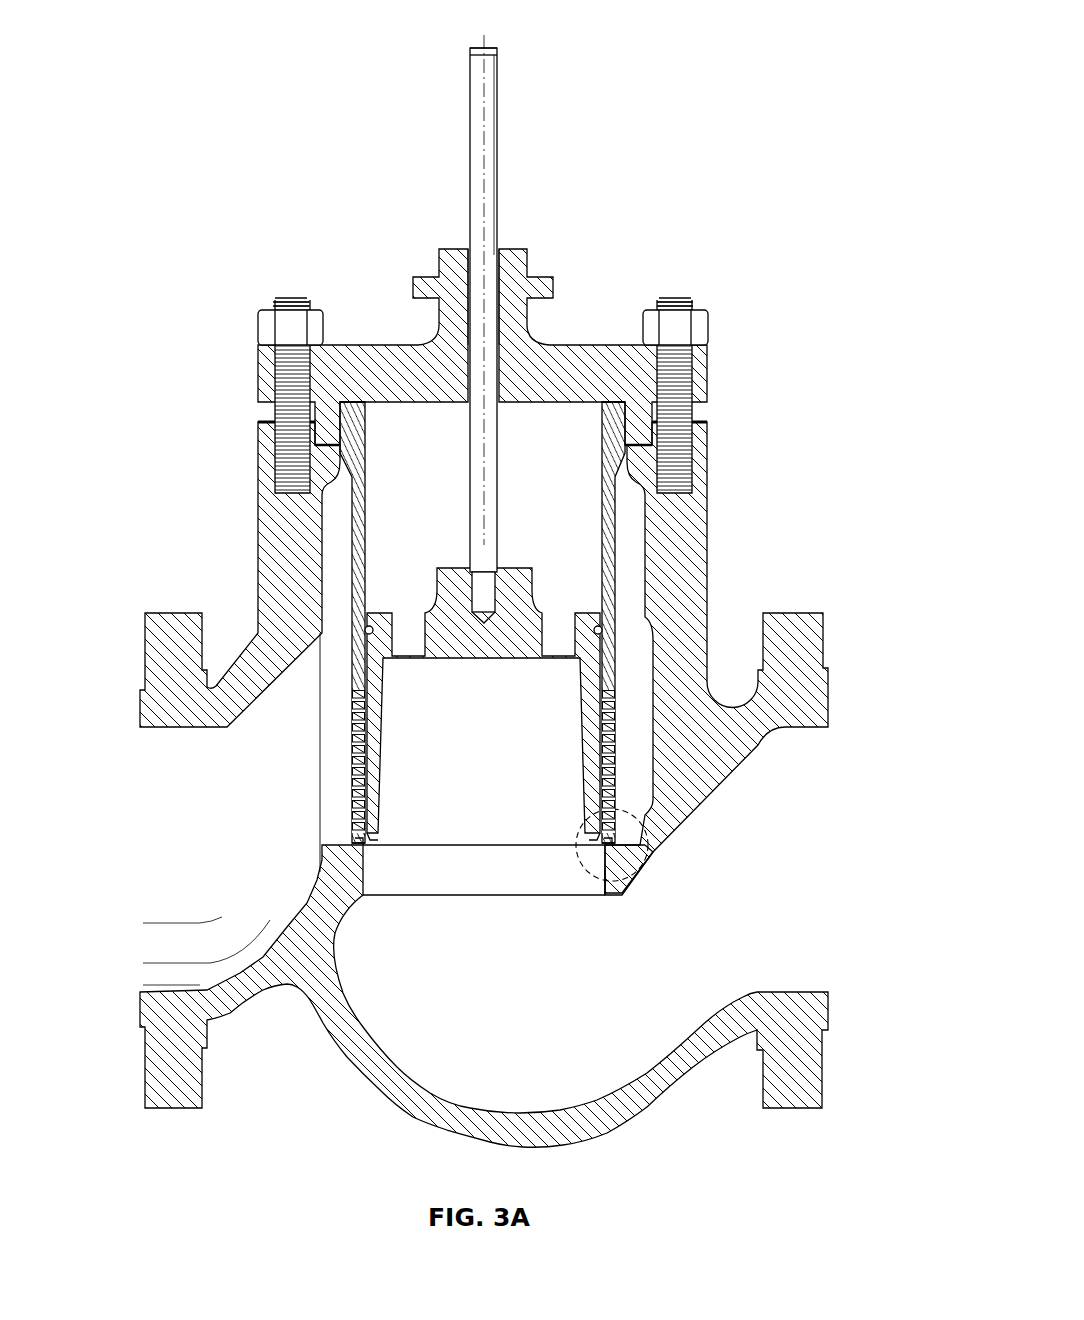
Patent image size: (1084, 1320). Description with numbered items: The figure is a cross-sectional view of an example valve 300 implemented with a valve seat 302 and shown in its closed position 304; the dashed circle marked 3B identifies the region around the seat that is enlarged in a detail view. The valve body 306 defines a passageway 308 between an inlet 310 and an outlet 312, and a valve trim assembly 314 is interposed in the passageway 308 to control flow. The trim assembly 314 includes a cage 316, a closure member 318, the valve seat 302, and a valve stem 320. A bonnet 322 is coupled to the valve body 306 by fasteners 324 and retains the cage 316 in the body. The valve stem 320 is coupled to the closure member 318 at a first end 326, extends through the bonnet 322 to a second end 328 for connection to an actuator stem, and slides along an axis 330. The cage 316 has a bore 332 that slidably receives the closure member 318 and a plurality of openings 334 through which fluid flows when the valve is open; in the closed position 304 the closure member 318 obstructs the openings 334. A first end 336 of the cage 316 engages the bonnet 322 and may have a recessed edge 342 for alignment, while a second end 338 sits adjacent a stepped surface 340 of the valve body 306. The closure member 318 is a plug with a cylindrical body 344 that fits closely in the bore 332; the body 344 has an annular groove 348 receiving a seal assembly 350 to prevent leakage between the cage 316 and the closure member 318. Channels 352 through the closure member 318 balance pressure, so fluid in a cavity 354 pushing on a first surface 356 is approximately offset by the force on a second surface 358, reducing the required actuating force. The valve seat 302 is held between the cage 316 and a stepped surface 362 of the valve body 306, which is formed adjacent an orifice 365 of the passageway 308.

The valve 300 is at (264, 86).
The valve seat 302 is at (620, 850).
The closed position 304 is at (328, 754).
The valve body 306 is at (580, 1140).
The passageway 308 is at (516, 994).
The inlet 310 is at (832, 800).
The outlet 312 is at (138, 800).
The valve trim assembly 314 is at (450, 466).
The cage 316 is at (612, 530).
The closure member 318 is at (613, 618).
The valve stem 320 is at (500, 170).
The bonnet 322 is at (546, 343).
The fasteners 324 is at (292, 300).
The first end 326 is at (470, 548).
The second end 328 is at (470, 50).
The axis 330 is at (495, 116).
The bore 332 is at (368, 486).
The openings 334 is at (352, 714).
The first end 336 is at (368, 406).
The second end 338 is at (350, 838).
The stepped surface 340 is at (632, 855).
The recessed edge 342 is at (602, 446).
The cylindrical body 344 is at (586, 730).
The annular groove 348 is at (596, 636).
The seal assembly 350 is at (372, 634).
The channels 352 is at (554, 630).
The cavity 354 is at (572, 440).
The first surface 356 is at (502, 574).
The second surface 358 is at (507, 662).
The stepped surface 362 is at (606, 852).
The orifice 365 is at (364, 888).
The detail view 3B is at (650, 840).